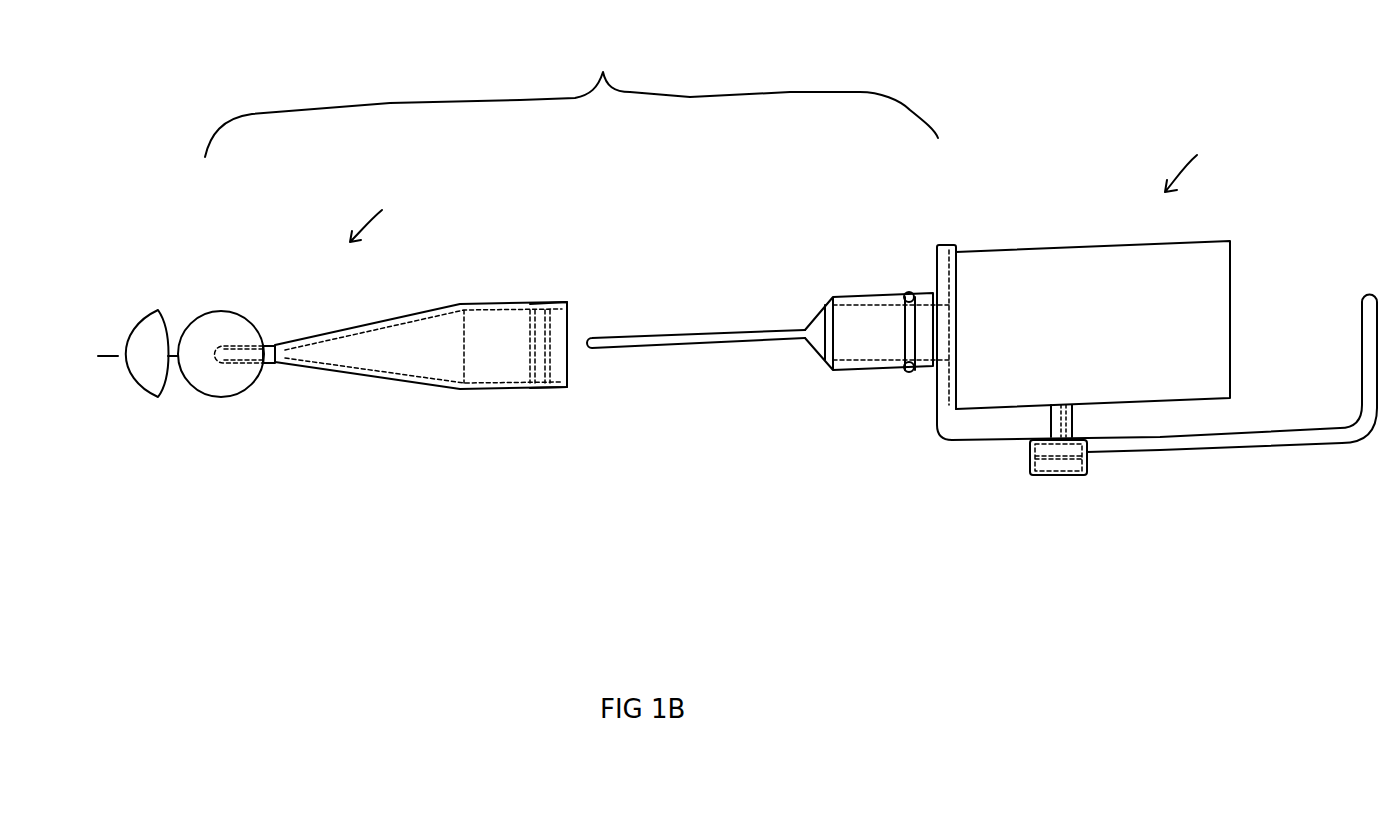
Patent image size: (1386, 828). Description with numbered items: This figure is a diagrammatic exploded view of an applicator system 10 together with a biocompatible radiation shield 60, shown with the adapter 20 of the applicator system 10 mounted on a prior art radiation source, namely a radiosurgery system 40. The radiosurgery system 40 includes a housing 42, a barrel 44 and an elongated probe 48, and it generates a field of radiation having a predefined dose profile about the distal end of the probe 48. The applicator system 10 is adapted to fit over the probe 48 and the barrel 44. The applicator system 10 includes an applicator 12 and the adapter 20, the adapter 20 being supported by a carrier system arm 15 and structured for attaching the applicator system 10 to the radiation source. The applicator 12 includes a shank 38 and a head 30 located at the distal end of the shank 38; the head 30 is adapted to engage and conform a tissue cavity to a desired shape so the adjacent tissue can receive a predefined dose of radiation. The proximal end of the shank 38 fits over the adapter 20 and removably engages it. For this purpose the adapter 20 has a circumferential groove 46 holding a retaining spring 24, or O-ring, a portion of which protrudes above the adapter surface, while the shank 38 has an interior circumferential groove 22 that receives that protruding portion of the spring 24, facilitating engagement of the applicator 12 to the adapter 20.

The applicator system 10 is at (571, 95).
The applicator 12 is at (381, 215).
The carrier system arm 15 is at (1203, 438).
The adapter 20 is at (947, 423).
The interior circumferential groove 22 is at (537, 303).
The retaining spring 24 is at (910, 373).
The head 30 is at (227, 393).
The shank 38 is at (388, 373).
The radiosurgery system 40 is at (1200, 160).
The housing 42 is at (1193, 252).
The barrel 44 is at (857, 323).
The circumferential groove 46 is at (914, 280).
The elongated probe 48 is at (645, 340).
The biocompatible radiation shield 60 is at (142, 332).